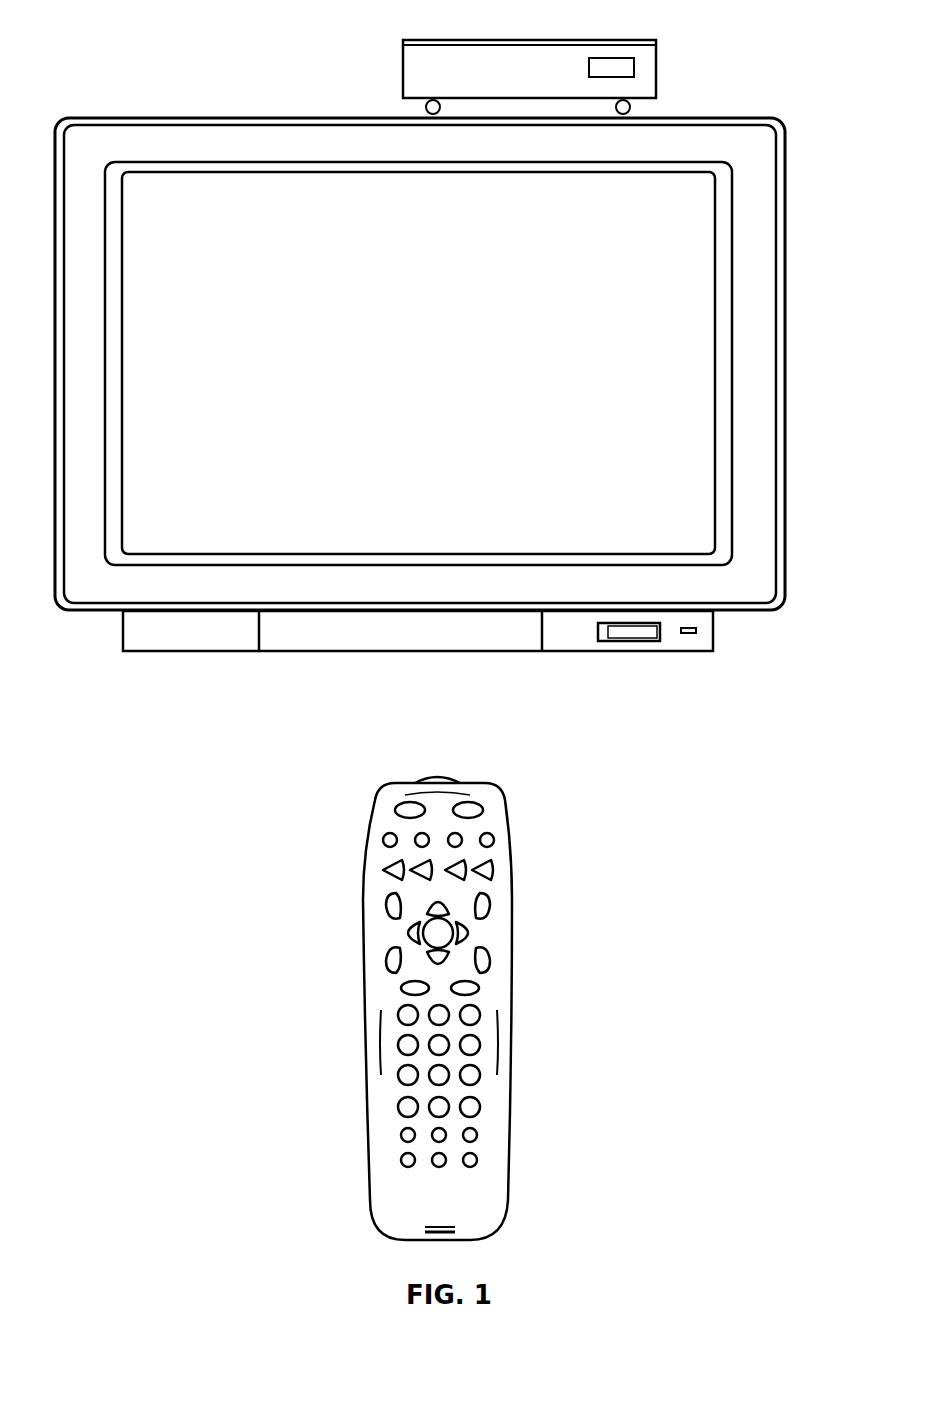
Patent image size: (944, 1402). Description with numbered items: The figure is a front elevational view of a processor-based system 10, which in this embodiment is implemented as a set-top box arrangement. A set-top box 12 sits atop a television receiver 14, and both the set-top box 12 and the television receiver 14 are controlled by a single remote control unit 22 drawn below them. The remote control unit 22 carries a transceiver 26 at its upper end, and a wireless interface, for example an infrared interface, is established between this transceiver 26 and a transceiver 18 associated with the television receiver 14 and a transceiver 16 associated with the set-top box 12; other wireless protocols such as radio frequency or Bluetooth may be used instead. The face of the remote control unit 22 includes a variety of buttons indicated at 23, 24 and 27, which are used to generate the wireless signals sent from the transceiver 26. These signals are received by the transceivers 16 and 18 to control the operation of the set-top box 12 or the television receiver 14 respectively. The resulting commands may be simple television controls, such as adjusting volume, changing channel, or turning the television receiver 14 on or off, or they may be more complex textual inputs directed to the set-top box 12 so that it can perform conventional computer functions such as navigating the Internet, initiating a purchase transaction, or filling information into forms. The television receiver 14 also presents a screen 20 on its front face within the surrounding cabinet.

The processor-based system 10 is at (763, 90).
The set-top box 12 is at (578, 40).
The television receiver 14 is at (784, 205).
The transceiver 16 is at (636, 62).
The transceiver 18 is at (627, 641).
The display screen 20 is at (700, 330).
The remote control unit 22 is at (560, 808).
The button 23 is at (445, 897).
The button 24 is at (480, 1077).
The transceiver 26 is at (447, 779).
The button 27 is at (446, 930).